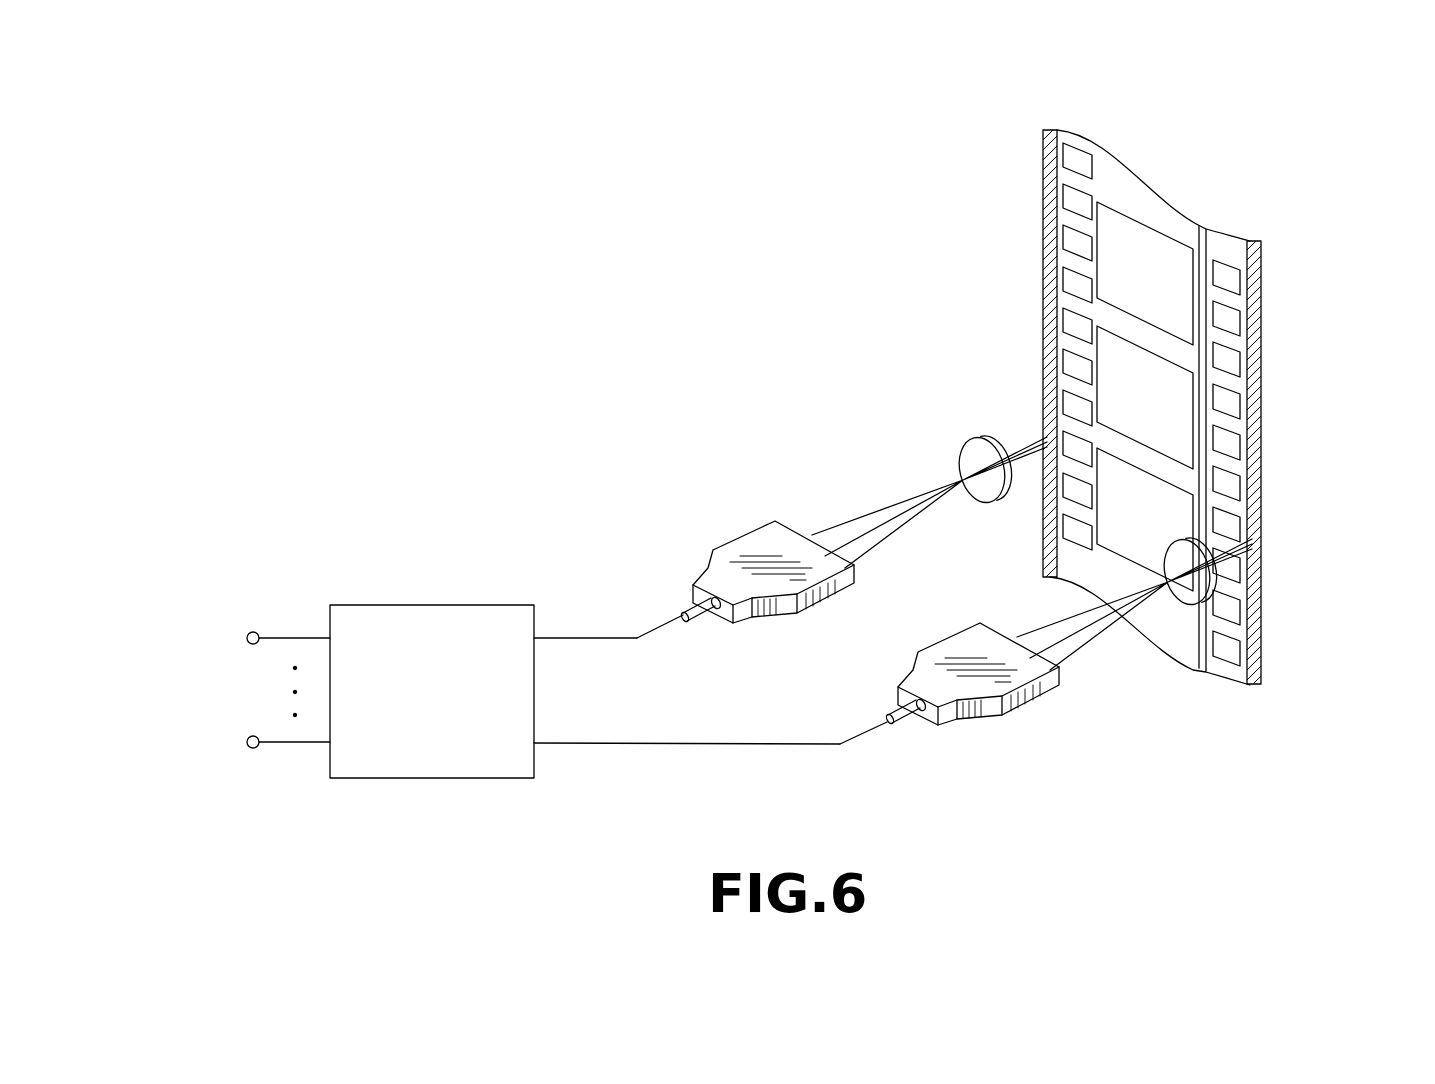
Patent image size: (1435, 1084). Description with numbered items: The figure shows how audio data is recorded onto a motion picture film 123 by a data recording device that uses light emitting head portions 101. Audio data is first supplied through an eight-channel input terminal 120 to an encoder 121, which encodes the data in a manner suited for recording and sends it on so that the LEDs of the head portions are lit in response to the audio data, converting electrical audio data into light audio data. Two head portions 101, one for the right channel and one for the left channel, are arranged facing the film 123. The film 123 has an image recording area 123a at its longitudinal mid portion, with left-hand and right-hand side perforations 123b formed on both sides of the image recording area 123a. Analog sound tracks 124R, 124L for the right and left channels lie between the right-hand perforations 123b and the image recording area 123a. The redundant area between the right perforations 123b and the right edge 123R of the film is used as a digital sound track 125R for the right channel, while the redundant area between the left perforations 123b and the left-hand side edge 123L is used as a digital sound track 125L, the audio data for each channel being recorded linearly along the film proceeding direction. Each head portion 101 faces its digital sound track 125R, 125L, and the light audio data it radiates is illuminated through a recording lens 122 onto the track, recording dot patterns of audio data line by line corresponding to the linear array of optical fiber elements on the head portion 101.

The head portion 101 is at (744, 547).
The 8-channel input terminal 120 is at (247, 633).
The encoder 121 is at (432, 604).
The recording lens 122 is at (973, 452).
The motion picture film 123 is at (1151, 374).
The image recording area 123a is at (1122, 230).
The perforations 123b is at (1075, 327).
The left-hand side edge 123L is at (1140, 358).
The right edge 123R is at (1294, 439).
The analog sound track for left channel 124L is at (1201, 226).
The analog sound track for right channel 124R is at (1208, 230).
The digital sound track for left channel 125L is at (1047, 128).
The digital sound track for right channel 125R is at (1257, 258).